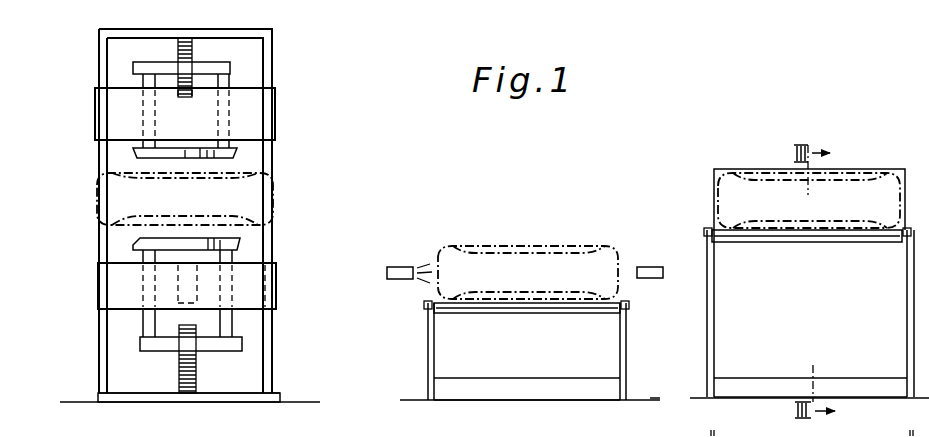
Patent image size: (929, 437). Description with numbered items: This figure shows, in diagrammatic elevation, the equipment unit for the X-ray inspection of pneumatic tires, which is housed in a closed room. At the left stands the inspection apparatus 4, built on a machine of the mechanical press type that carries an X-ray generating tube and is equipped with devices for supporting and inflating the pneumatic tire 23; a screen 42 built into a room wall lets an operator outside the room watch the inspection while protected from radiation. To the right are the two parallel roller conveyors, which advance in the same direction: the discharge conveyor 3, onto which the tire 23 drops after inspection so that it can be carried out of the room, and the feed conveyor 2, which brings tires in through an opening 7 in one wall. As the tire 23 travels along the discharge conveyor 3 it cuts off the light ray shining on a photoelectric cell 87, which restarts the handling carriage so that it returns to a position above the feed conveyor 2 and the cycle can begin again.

The inspection apparatus 4 is at (283, 83).
The pneumatic tire 23 is at (275, 196).
The screen 42 is at (218, 436).
The discharge conveyor 3 is at (528, 232).
The photoelectric cell 87 is at (400, 267).
The feed conveyor 2 is at (773, 150).
The opening 7 is at (848, 436).